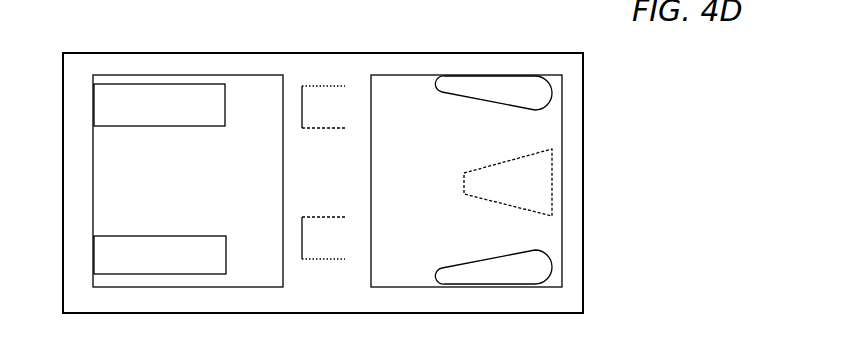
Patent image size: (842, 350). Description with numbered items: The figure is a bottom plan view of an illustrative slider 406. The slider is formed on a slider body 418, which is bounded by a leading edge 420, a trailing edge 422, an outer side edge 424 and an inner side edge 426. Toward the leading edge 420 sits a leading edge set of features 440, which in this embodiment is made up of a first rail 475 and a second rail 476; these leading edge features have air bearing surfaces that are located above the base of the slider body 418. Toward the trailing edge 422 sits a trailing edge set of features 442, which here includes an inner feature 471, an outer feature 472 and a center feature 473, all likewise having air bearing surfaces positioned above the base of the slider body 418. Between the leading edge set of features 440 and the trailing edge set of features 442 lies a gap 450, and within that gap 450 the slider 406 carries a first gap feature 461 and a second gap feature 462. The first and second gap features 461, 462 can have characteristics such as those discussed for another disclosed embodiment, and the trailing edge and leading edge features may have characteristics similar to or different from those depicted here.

The slider 406 is at (621, 178).
The slider body 418 is at (584, 297).
The leading edge 420 is at (63, 150).
The trailing edge 422 is at (585, 128).
The outer side edge 424 is at (207, 53).
The inner side edge 426 is at (187, 313).
The leading edge set of features 440 is at (162, 192).
The trailing edge set of features 442 is at (394, 161).
The gap 450 is at (301, 181).
The first gap feature 461 is at (300, 114).
The second gap feature 462 is at (314, 248).
The inner feature 471 is at (494, 96).
The outer feature 472 is at (494, 281).
The center feature 473 is at (502, 194).
The first rail 475 is at (148, 111).
The second rail 476 is at (152, 266).